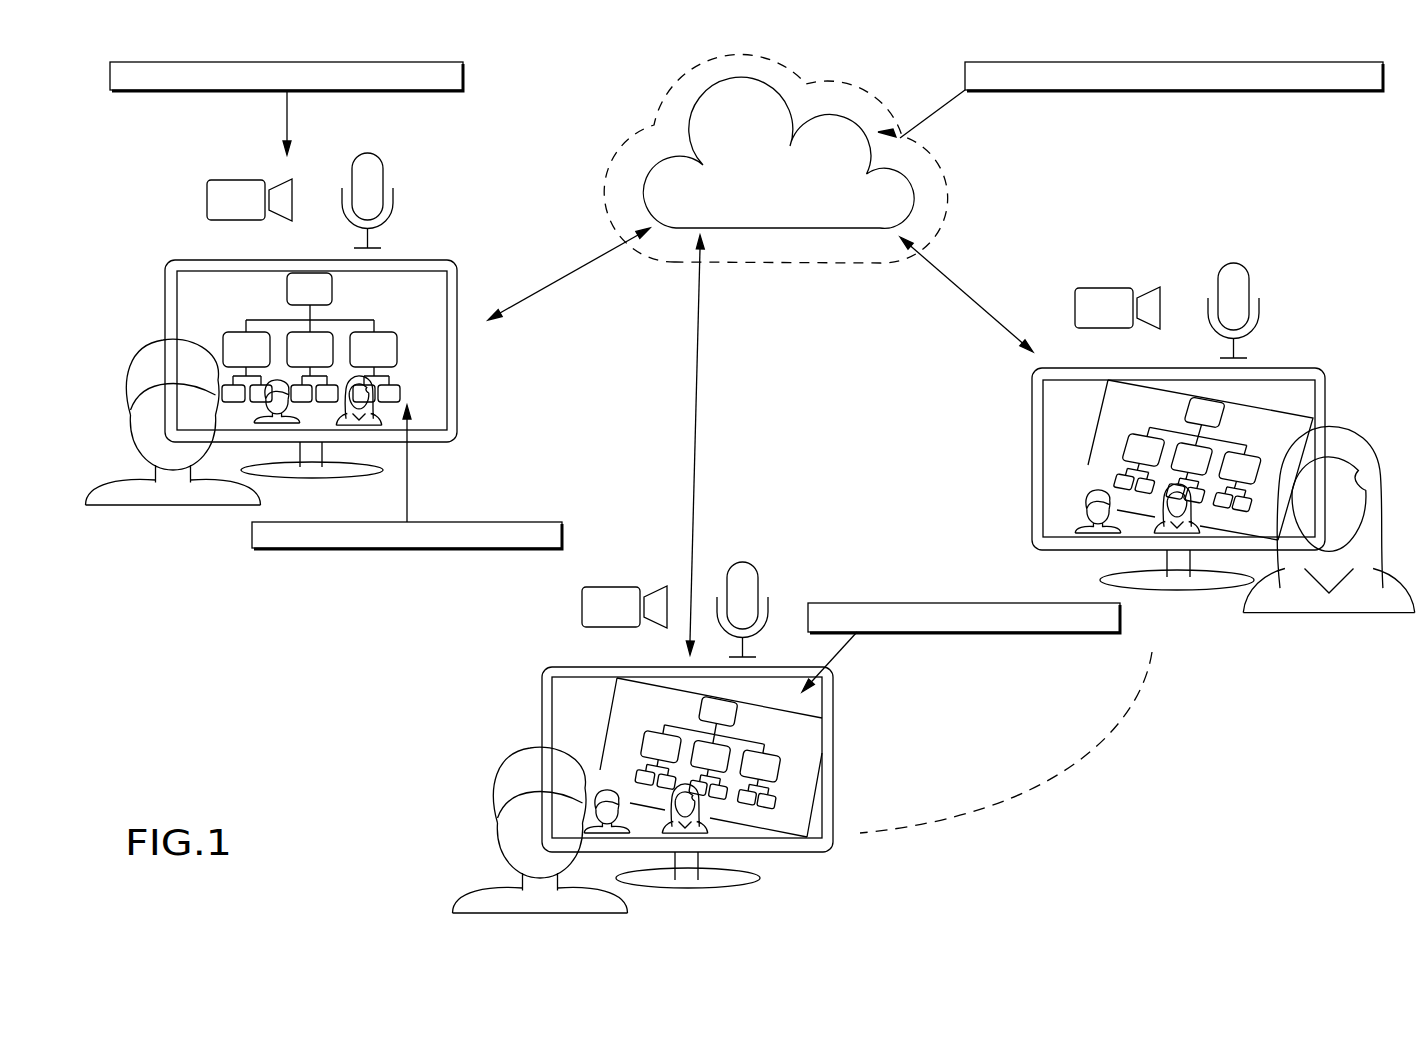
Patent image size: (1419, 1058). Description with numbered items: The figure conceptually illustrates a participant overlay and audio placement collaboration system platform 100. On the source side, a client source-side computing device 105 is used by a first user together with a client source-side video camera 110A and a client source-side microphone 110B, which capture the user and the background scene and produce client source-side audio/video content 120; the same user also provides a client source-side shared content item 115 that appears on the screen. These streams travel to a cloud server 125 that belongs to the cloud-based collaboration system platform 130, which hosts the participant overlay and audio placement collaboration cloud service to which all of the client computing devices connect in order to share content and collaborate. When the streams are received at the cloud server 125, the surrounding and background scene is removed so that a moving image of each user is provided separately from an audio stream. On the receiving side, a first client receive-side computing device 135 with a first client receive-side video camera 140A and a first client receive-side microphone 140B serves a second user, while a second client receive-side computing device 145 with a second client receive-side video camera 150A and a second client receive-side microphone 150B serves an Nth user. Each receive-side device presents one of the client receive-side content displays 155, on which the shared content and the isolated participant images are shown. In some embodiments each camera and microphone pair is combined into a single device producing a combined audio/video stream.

The participant overlay and audio placement collaboration system platform 100 is at (245, 42).
The client source-side computing device 105 is at (165, 305).
The client source-side video camera 110A is at (207, 198).
The client source-side microphone 110B is at (367, 237).
The client source-side shared content item 115 is at (333, 548).
The client source-side audio/video content 120 is at (422, 90).
The cloud server 125 is at (770, 216).
The cloud-based collaboration system platform 130 is at (1058, 90).
The first client receive-side computing device 135 is at (542, 715).
The first client receive-side video camera 140A is at (582, 605).
The first client receive-side microphone 140B is at (758, 570).
The second client receive-side computing device 145 is at (1325, 408).
The second client receive-side video camera 150A is at (1102, 288).
The second client receive-side microphone 150B is at (1234, 345).
The client receive-side content displays 155 is at (968, 632).